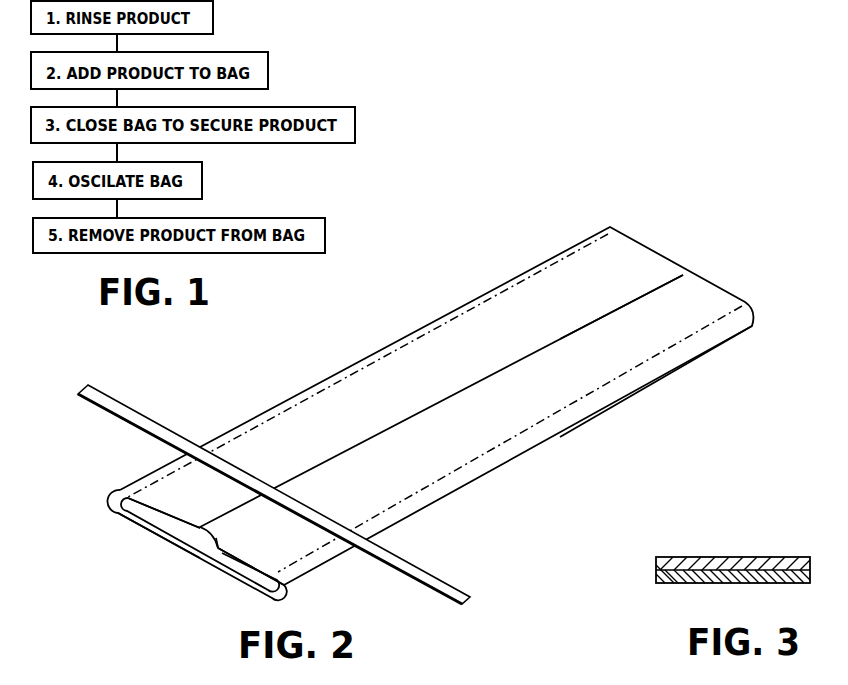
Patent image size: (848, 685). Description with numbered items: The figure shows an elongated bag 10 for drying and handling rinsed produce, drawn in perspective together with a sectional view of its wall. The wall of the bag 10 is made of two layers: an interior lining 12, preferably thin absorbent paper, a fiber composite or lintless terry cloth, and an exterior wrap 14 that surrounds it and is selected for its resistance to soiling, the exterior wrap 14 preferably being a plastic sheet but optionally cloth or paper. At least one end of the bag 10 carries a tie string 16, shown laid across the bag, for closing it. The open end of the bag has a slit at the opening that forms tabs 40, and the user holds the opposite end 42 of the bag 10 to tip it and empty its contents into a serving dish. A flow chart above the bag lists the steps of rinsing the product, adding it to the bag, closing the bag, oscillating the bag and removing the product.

In FIG. 2, the bag 10 is at (398, 387).
In FIG. 3, the bag 10 is at (737, 553).
In FIG. 2, the interior lining 12 is at (138, 514).
In FIG. 3, the interior lining 12 is at (678, 583).
In FIG. 2, the exterior wrap 14 is at (592, 416).
In FIG. 3, the exterior wrap 14 is at (693, 560).
In FIG. 2, the tie string 16 is at (127, 421).
In FIG. 2, the tabs 40 is at (207, 517).
In FIG. 2, the end of the bag 42 is at (683, 275).